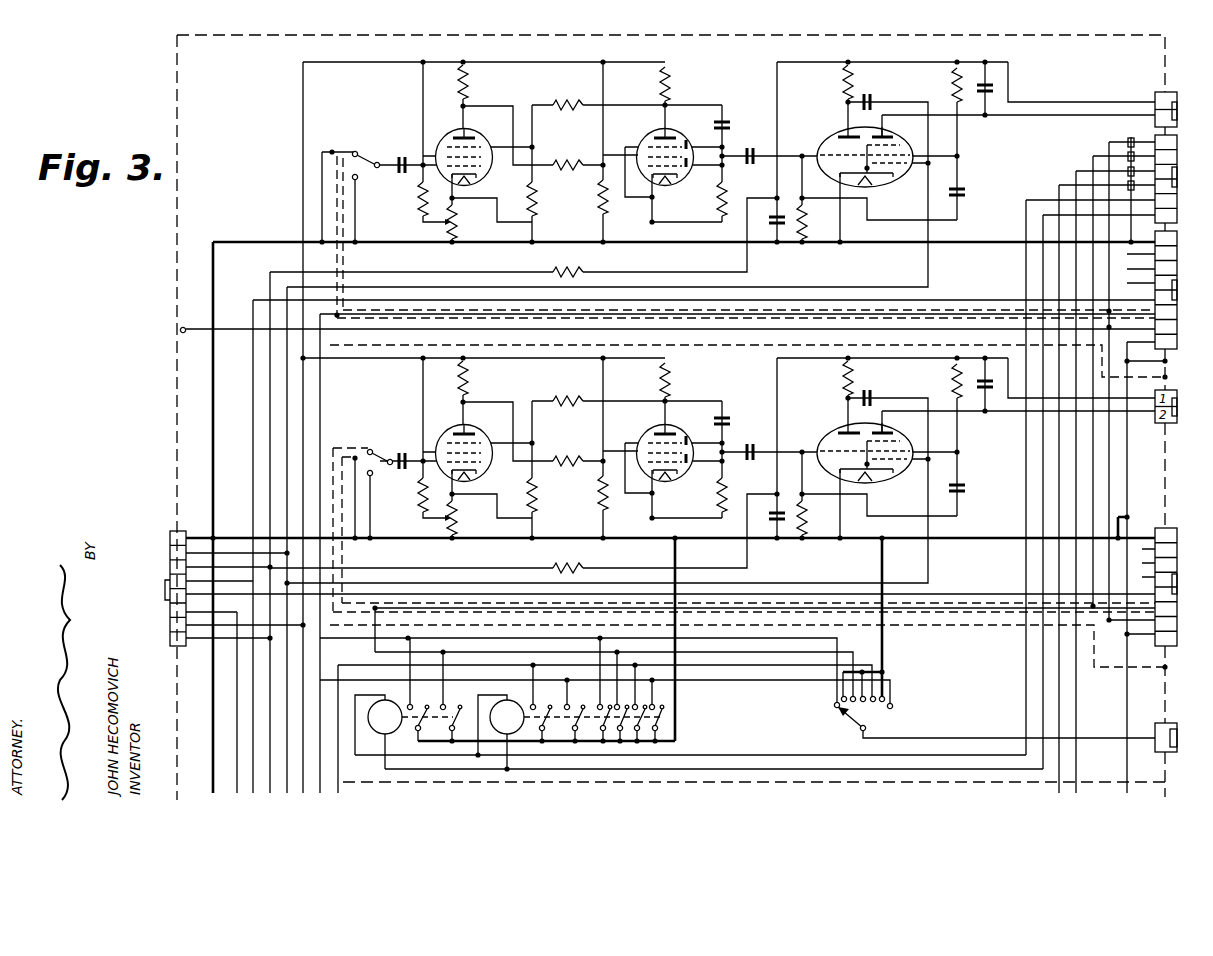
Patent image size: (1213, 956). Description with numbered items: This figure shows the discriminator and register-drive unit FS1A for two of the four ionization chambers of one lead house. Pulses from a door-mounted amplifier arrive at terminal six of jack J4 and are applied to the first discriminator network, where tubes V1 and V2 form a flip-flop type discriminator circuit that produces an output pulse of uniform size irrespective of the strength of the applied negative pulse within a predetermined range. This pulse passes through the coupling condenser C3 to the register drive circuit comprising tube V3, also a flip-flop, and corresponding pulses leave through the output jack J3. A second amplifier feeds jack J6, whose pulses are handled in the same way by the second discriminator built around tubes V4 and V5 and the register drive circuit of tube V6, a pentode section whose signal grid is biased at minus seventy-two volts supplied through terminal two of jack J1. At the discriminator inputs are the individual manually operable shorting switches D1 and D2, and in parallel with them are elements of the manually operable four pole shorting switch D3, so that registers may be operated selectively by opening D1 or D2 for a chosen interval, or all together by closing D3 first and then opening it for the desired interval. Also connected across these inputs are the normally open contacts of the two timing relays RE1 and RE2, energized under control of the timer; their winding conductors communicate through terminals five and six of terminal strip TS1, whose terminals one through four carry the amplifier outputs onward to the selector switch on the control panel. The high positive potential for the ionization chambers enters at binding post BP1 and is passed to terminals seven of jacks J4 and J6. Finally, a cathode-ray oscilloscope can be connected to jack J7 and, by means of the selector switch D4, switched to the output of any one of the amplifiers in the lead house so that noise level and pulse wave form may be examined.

The tube V1 is at (464, 146).
The tube V2 is at (664, 146).
The tube V3 is at (863, 147).
The tube V4 is at (464, 442).
The tube V5 is at (664, 442).
The tube V6 is at (863, 443).
The coupling condenser C3 is at (747, 167).
The shorting switch D1 is at (737, 225).
The shorting switch D2 is at (744, 521).
The four pole shorting switch D3 is at (662, 722).
The selector switch D4 is at (989, 717).
The timing relay RE1 is at (378, 732).
The timing relay RE2 is at (501, 732).
The jack J1 is at (162, 588).
The output jack J3 is at (1176, 109).
The jack J4 is at (1175, 290).
The jack J6 is at (1175, 587).
The jack J7 is at (1175, 737).
The terminal strip TS1 is at (1182, 179).
The binding post BP1 is at (162, 332).
The frequency selector unit FS1A is at (268, 133).